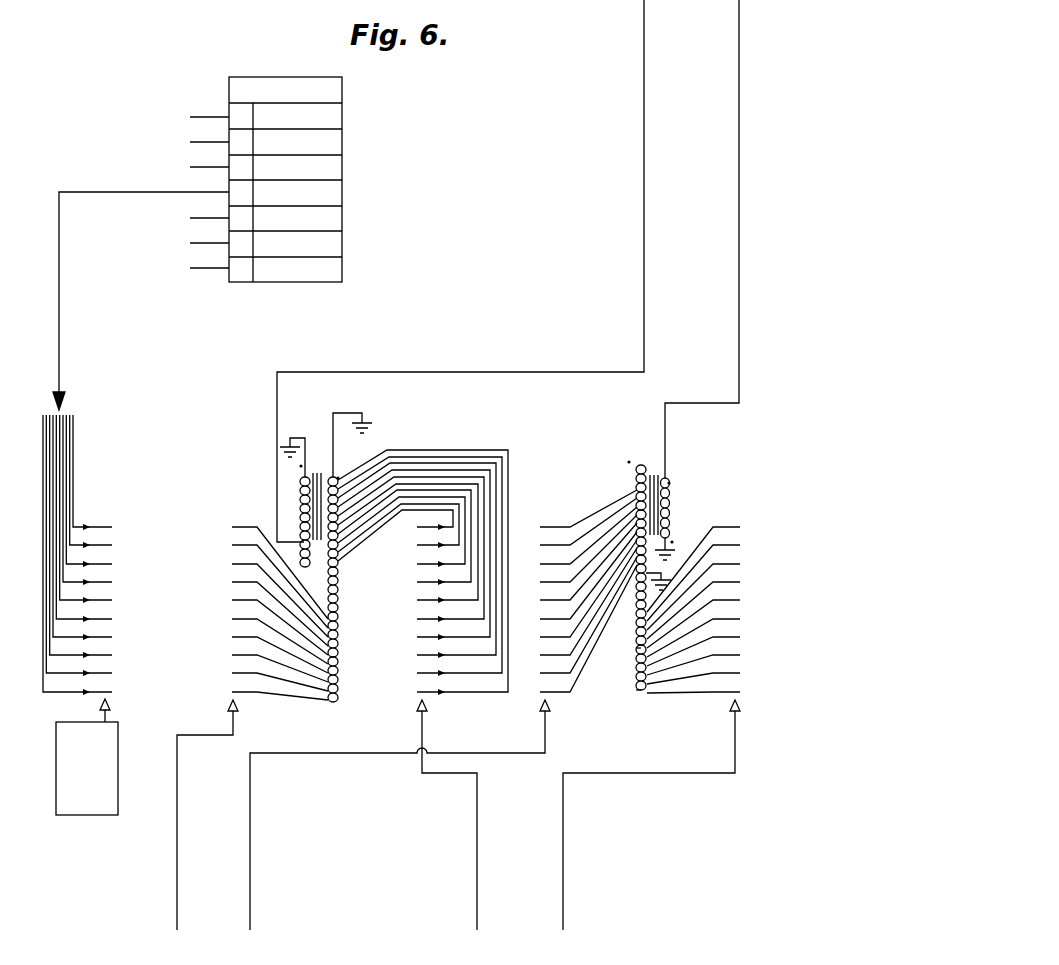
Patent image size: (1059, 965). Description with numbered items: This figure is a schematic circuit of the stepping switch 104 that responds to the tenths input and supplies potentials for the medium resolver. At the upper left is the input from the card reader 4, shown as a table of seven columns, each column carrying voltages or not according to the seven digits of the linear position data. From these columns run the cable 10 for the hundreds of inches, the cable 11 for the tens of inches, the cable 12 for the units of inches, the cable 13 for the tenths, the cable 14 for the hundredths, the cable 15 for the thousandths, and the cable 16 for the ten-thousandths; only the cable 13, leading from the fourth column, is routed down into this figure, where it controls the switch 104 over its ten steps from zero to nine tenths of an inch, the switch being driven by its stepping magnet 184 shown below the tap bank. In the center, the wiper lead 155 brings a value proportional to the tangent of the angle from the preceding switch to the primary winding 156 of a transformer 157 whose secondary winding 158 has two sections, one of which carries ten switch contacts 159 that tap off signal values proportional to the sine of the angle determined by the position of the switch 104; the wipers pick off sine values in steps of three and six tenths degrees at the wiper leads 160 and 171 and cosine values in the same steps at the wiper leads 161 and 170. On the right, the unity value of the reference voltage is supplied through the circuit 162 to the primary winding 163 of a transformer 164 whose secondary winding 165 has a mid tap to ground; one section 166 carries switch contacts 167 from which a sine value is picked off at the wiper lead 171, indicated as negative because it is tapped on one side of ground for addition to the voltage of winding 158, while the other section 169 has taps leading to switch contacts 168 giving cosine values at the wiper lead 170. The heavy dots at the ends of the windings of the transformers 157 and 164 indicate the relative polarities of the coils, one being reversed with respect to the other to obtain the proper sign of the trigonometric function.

The input from the card reader 4 is at (296, 77).
The cable 10 is at (217, 117).
The cable 11 is at (217, 142).
The cable 12 is at (217, 167).
The cable 13 is at (217, 192).
The cable 14 is at (217, 218).
The cable 15 is at (217, 243).
The cable 16 is at (217, 268).
The stepping switch 104 is at (205, 454).
The wiper lead 155 is at (644, 40).
The primary winding 156 is at (300, 482).
The transformer 157 is at (316, 468).
The secondary winding 158 is at (338, 588).
The switch contacts 159 is at (415, 558).
The wiper lead 160 is at (420, 714).
The wiper lead 161 is at (231, 714).
The circuit 162 is at (739, 40).
The primary winding 163 is at (671, 505).
The transformer 164 is at (653, 472).
The secondary winding 165 is at (634, 648).
The section 166 is at (635, 492).
The switch contacts 167 is at (560, 526).
The switch contacts 168 is at (740, 527).
The section 169 is at (636, 690).
The wiper lead 170 is at (737, 717).
The wiper lead 171 is at (543, 716).
The stepping magnet 184 is at (87, 757).